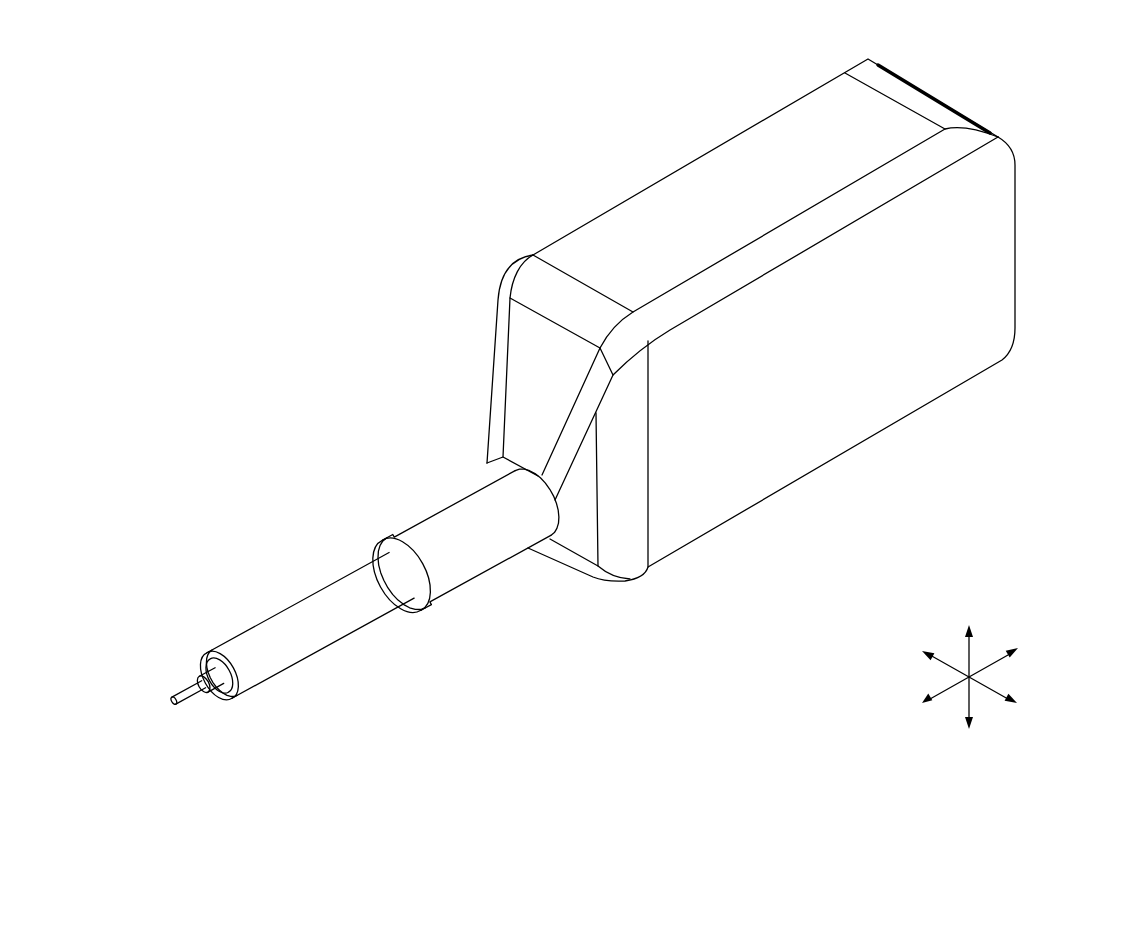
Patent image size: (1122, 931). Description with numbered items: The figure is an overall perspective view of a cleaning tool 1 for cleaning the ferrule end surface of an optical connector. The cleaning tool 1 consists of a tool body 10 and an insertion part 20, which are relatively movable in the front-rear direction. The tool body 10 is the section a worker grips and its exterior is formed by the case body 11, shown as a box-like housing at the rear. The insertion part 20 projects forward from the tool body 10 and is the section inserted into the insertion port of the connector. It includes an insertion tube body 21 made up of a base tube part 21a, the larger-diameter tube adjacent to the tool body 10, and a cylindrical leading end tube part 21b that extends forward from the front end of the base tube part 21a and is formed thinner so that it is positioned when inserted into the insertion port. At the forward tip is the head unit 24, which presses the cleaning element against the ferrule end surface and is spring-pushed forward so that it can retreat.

The cleaning tool 1 is at (489, 111).
The tool body 10 is at (658, 118).
The case body 11 is at (805, 118).
The insertion part 20 is at (298, 370).
The insertion tube body 21 is at (438, 450).
The base tube part 21a is at (458, 517).
The leading end tube part 21b is at (330, 595).
The head unit 24 is at (168, 672).